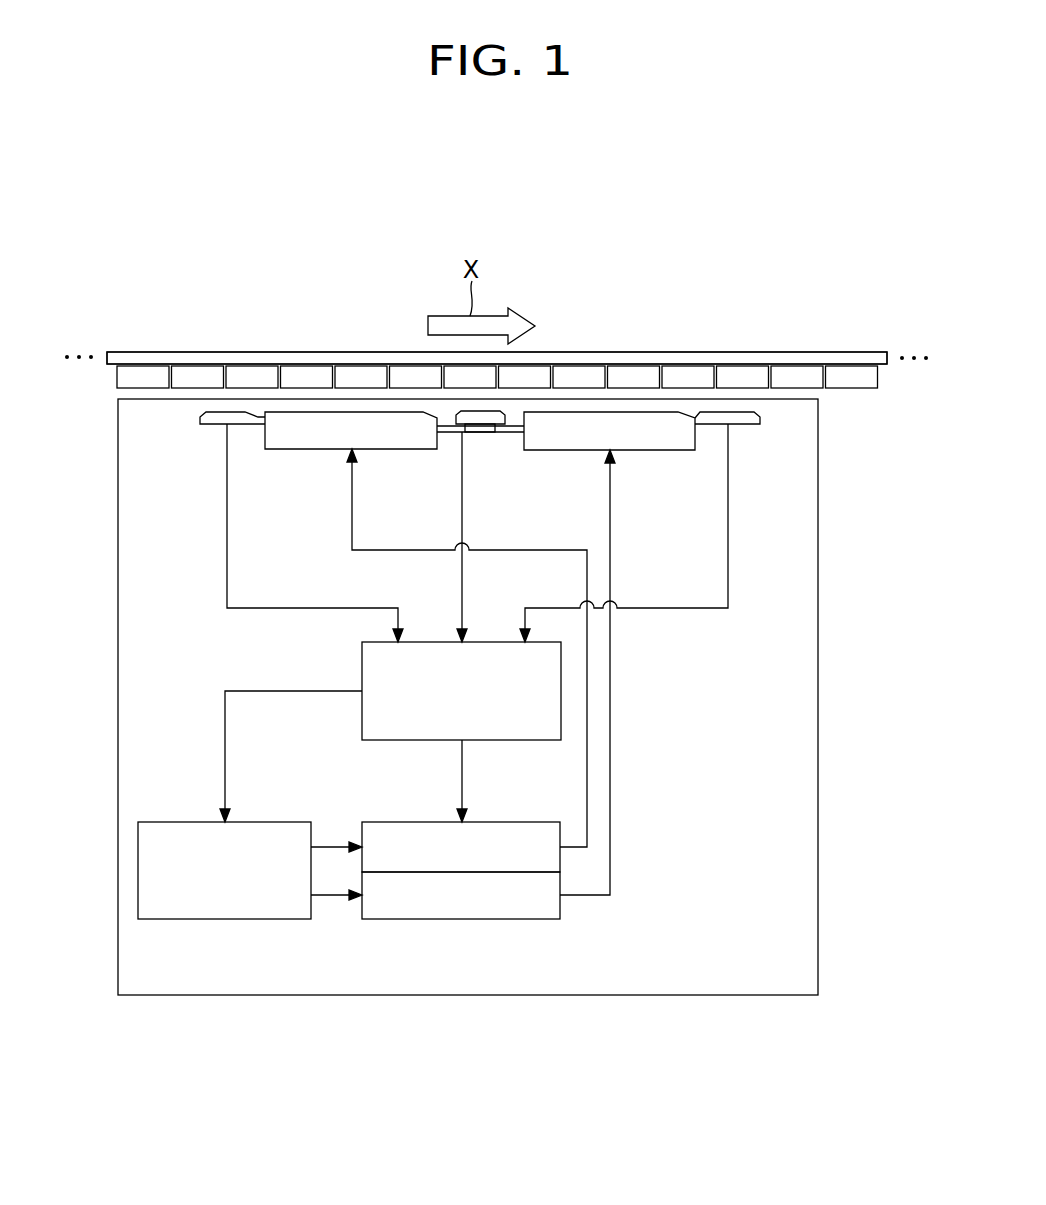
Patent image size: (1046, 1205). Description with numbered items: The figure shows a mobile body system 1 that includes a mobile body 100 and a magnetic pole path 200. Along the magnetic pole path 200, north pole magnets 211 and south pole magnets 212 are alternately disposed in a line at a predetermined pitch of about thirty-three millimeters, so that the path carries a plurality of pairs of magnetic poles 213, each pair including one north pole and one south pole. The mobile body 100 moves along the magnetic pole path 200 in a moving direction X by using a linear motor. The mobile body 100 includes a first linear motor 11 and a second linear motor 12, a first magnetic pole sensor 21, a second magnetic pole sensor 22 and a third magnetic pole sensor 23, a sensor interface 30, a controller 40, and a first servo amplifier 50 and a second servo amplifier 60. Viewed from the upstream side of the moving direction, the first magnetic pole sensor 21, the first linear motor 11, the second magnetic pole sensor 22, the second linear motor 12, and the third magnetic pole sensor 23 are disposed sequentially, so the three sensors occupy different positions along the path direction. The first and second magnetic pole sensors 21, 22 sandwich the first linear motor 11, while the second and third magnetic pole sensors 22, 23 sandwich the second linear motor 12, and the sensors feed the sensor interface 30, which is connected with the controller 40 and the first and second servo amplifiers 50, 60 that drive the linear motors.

The mobile body system 1 is at (836, 268).
The magnetic pole path 200 is at (853, 352).
The north pole magnets 211 is at (140, 366).
The south pole magnets 212 is at (197, 366).
The pairs of magnetic poles 213 is at (233, 308).
The mobile body 100 is at (818, 533).
The first linear motor 11 is at (676, 450).
The second linear motor 12 is at (305, 449).
The first magnetic pole sensor 21 is at (752, 424).
The second magnetic pole sensor 22 is at (502, 432).
The third magnetic pole sensor 23 is at (213, 425).
The sensor interface 30 is at (362, 657).
The controller 40 is at (163, 822).
The first servo amplifier 50 is at (393, 920).
The second servo amplifier 60 is at (387, 822).